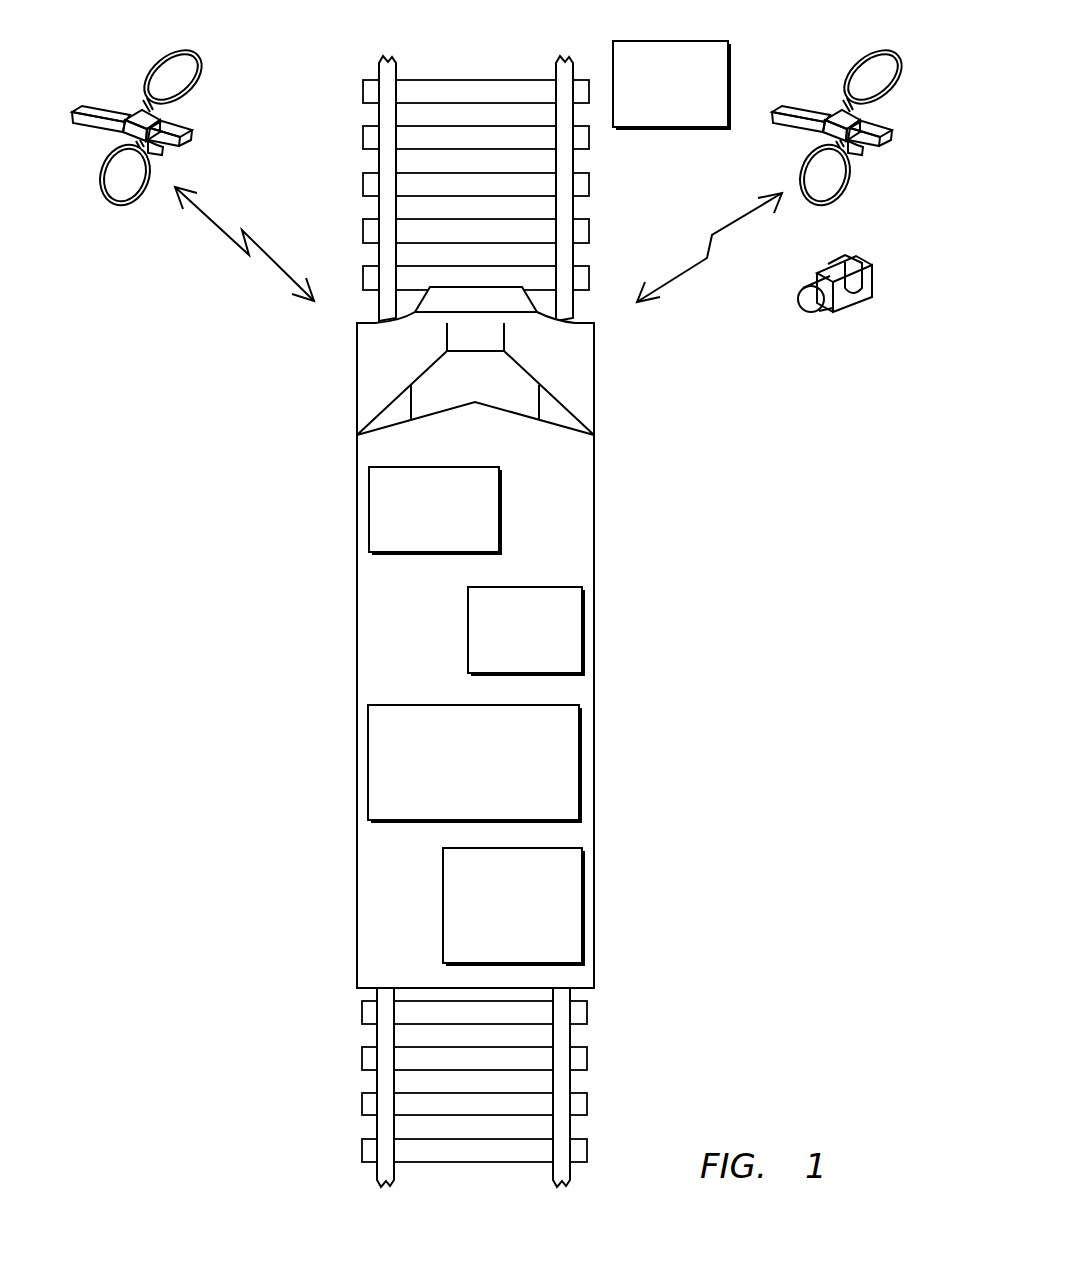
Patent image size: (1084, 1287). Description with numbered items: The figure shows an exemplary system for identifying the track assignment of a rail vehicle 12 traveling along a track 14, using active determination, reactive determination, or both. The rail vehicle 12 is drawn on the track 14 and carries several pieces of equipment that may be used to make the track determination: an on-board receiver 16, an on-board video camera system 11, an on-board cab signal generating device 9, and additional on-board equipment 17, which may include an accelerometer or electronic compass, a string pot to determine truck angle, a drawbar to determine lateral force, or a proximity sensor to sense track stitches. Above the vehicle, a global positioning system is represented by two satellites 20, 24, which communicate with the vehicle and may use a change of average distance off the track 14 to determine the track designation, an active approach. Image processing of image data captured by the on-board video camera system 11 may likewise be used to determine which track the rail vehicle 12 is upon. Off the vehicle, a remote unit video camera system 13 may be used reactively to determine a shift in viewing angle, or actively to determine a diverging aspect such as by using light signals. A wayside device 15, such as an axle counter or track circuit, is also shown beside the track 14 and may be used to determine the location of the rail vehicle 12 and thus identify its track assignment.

The on-board cab signal generating device 9 is at (368, 765).
The on-board video camera system 11 is at (582, 628).
The rail vehicle 12 is at (593, 517).
The remote unit video camera system 13 is at (852, 258).
The track 14 is at (588, 1057).
The wayside device 15 is at (670, 41).
The on-board receiver 16 is at (369, 510).
The additional on-board equipment 17 is at (582, 905).
The satellite 20 is at (177, 123).
The satellite 24 is at (887, 123).